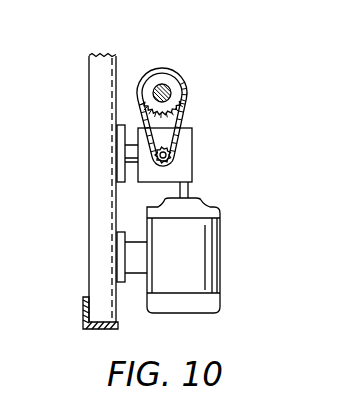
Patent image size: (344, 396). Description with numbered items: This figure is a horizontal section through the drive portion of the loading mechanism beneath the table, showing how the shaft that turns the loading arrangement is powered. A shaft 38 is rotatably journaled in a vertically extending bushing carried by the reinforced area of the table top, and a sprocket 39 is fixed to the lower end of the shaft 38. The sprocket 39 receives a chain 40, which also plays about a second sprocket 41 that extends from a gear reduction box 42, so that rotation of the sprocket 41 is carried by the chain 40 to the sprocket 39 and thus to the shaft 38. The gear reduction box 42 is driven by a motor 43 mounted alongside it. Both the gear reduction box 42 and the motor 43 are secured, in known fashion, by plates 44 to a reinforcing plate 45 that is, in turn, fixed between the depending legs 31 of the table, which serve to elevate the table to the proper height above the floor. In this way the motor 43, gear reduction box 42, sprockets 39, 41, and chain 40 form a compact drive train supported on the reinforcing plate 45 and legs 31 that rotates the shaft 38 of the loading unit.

The depending legs 31 is at (93, 328).
The shaft 38 is at (161, 84).
The sprocket 39 is at (187, 80).
The chain 40 is at (186, 119).
The sprocket 41 is at (175, 160).
The gear reduction box 42 is at (193, 148).
The motor 43 is at (219, 232).
The plates 44 is at (127, 182).
The reinforcing plate 45 is at (95, 245).